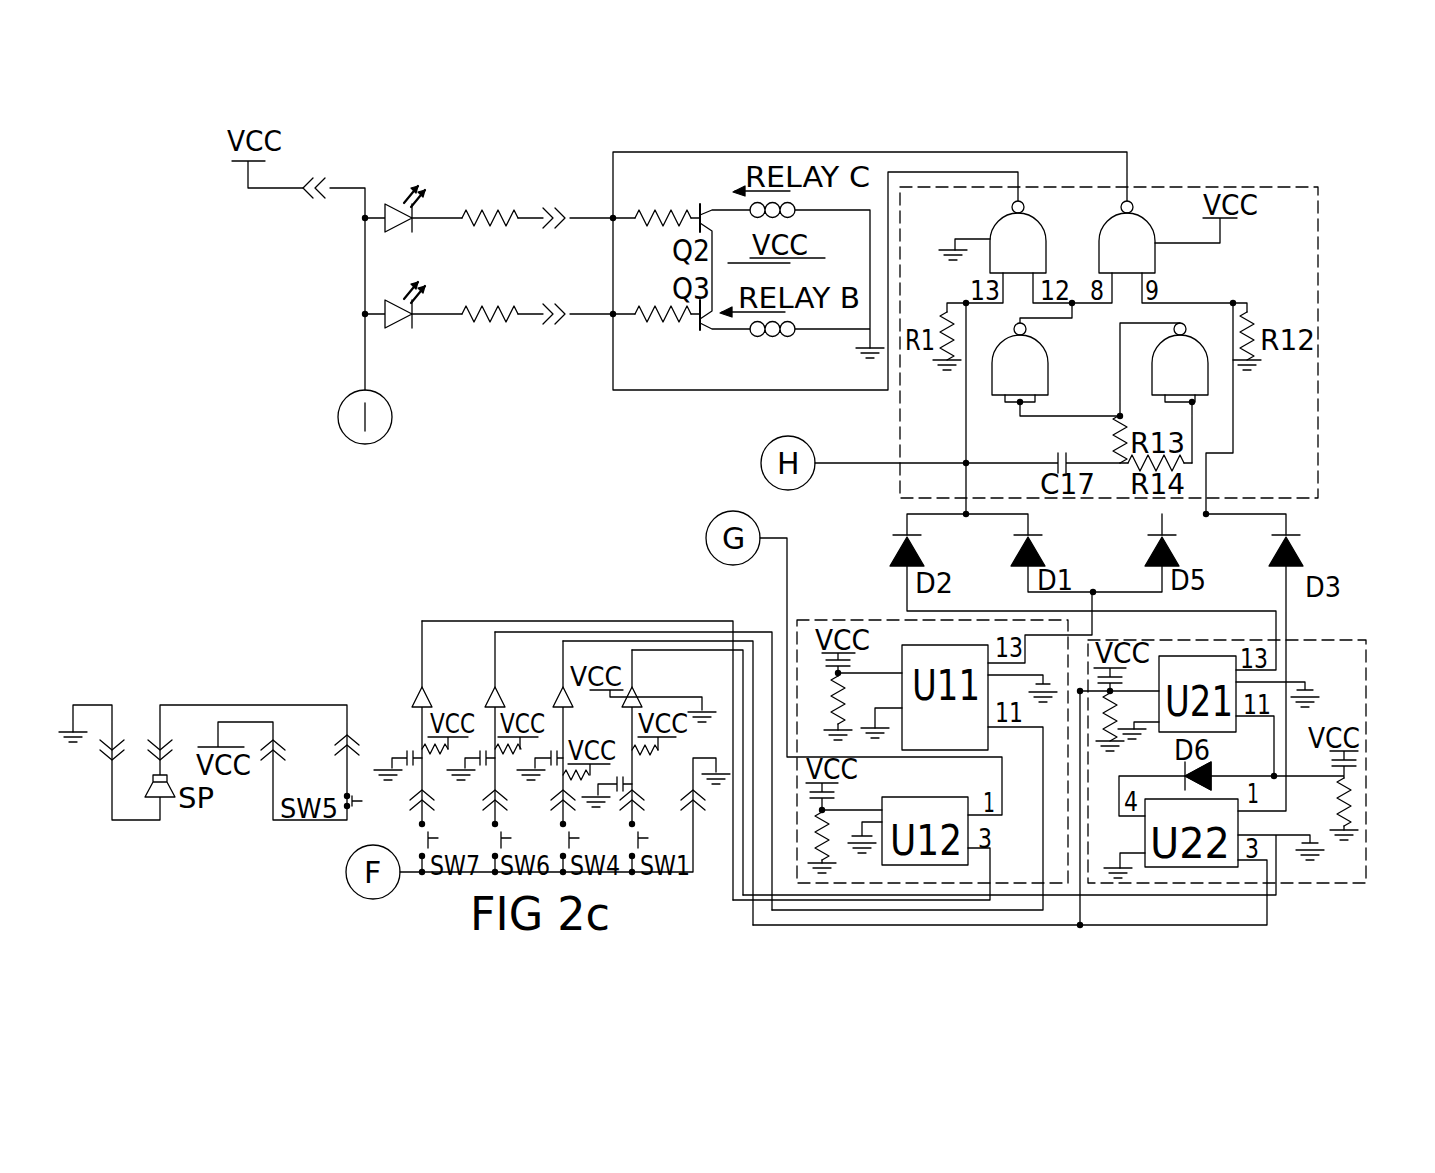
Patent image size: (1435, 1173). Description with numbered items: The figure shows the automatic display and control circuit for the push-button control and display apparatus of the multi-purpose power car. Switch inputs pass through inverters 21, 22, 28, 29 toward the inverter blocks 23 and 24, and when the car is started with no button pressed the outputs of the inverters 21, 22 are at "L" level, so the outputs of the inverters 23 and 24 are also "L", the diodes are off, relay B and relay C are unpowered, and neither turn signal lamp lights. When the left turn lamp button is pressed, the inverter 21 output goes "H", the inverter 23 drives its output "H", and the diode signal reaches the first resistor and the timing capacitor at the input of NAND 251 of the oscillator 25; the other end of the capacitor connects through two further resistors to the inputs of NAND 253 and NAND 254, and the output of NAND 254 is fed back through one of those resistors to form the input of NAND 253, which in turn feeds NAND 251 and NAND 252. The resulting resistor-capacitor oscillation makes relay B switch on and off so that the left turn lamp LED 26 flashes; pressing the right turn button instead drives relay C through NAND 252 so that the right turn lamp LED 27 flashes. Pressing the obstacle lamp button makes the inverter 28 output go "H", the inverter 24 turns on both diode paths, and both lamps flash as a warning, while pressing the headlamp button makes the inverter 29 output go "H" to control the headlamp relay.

The inverter 21 is at (649, 737).
The inverter 22 is at (518, 728).
The inverter 23 is at (1322, 643).
The inverter 24 is at (879, 620).
The oscillator 25 is at (1152, 190).
The left turn lamp LED 26 is at (413, 304).
The right turn lamp LED 27 is at (413, 208).
The inverter 28 is at (578, 732).
The inverter 29 is at (436, 722).
The NAND gate 251 is at (1018, 237).
The NAND gate 252 is at (1127, 237).
The NAND gate 253 is at (1020, 359).
The NAND gate 254 is at (1180, 359).